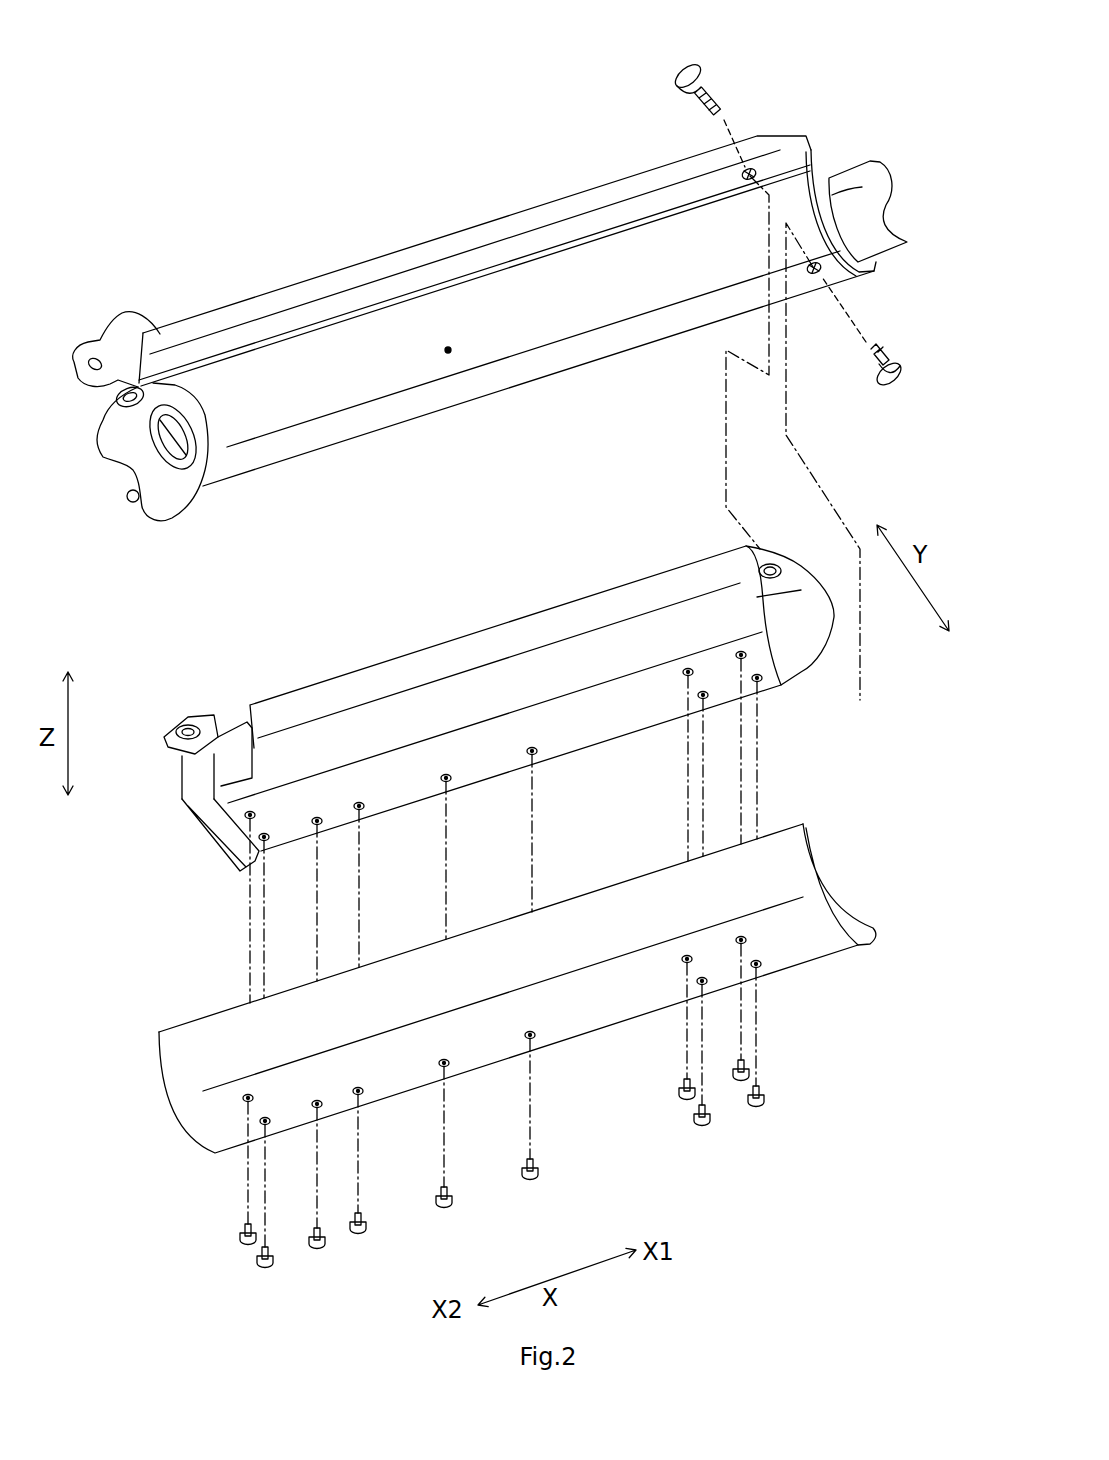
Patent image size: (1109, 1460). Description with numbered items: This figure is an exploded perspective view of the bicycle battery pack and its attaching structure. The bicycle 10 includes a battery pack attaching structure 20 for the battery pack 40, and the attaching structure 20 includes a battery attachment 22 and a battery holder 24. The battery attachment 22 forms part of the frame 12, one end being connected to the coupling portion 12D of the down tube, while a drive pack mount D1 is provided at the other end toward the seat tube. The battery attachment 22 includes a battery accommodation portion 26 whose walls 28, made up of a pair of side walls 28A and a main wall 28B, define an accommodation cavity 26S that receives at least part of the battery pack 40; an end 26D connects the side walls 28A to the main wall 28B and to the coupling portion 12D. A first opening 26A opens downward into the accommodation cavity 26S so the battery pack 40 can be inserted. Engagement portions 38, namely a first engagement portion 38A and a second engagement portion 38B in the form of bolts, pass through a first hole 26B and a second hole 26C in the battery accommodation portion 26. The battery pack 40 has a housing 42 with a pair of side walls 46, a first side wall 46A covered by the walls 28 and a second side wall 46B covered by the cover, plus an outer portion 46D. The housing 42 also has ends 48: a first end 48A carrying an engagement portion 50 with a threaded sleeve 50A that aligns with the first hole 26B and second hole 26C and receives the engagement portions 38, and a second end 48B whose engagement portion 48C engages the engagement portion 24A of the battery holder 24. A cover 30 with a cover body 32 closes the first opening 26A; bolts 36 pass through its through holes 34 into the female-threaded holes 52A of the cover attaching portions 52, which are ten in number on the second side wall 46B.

The bicycle 10 is at (884, 62).
The frame 12 is at (902, 243).
The coupling portion 12D is at (848, 176).
The drive pack mount D1 is at (125, 320).
The battery pack attaching structure 20 is at (780, 62).
The battery attachment 22 is at (480, 144).
The battery holder 24 is at (194, 780).
The engagement portion 24A is at (235, 713).
The battery accommodation portion 26 is at (548, 212).
The first opening 26A is at (565, 355).
The first hole 26B is at (735, 182).
The second hole 26C is at (814, 275).
The end 26D is at (817, 161).
The accommodation cavity 26S is at (448, 353).
The walls 28 is at (489, 324).
The side walls 28A is at (270, 330).
The main wall 28B is at (382, 262).
The cover 30 is at (838, 912).
The cover body 32 is at (825, 942).
The through holes 34 is at (700, 982).
The bolts 36 is at (702, 1138).
The engagement portions 38 is at (787, 250).
The first engagement portion 38A is at (693, 72).
The second engagement portion 38B is at (892, 385).
The battery pack 40 is at (810, 662).
The housing 42 is at (455, 653).
The side walls 46 is at (504, 692).
The first side wall 46A is at (598, 605).
The second side wall 46B is at (600, 735).
The outer portion 46D is at (330, 690).
The ends 48 is at (524, 690).
The first end 48A is at (805, 643).
The second end 48B is at (194, 818).
The engagement portion 48C is at (254, 756).
The engagement portion 50 is at (774, 559).
The sleeve 50A is at (781, 559).
The cover attaching portion 52 is at (712, 766).
The holes 52A is at (701, 696).